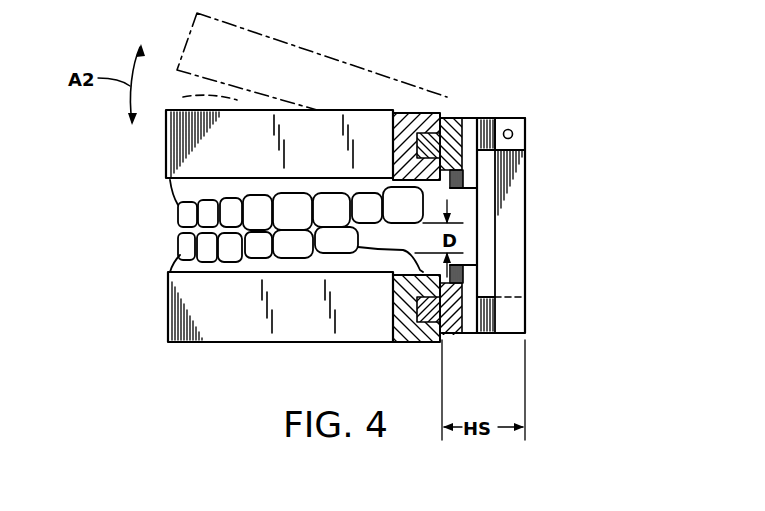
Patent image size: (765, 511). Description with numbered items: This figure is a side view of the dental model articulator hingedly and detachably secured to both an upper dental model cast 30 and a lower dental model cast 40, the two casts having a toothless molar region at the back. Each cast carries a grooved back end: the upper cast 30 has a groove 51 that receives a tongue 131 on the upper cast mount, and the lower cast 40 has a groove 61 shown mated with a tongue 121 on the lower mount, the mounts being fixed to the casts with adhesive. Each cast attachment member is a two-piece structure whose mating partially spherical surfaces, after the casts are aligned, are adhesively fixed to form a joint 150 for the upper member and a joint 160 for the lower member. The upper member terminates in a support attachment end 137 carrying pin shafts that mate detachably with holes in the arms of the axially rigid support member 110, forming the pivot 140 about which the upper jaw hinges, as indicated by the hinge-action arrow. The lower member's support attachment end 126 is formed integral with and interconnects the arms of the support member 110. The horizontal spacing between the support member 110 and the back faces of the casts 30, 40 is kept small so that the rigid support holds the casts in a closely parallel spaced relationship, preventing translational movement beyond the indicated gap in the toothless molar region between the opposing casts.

The upper dental model cast 30 is at (182, 143).
The lower dental model cast 40 is at (168, 305).
The groove 51 is at (423, 132).
The groove 61 is at (412, 303).
The axially rigid support member 110 is at (508, 219).
The tongue 121 is at (432, 342).
The support attachment end 126 is at (490, 316).
The tongue 131 is at (403, 140).
The support attachment end 137 is at (498, 124).
The pivot 140 is at (513, 134).
The joint 150 is at (478, 113).
The joint 160 is at (478, 334).